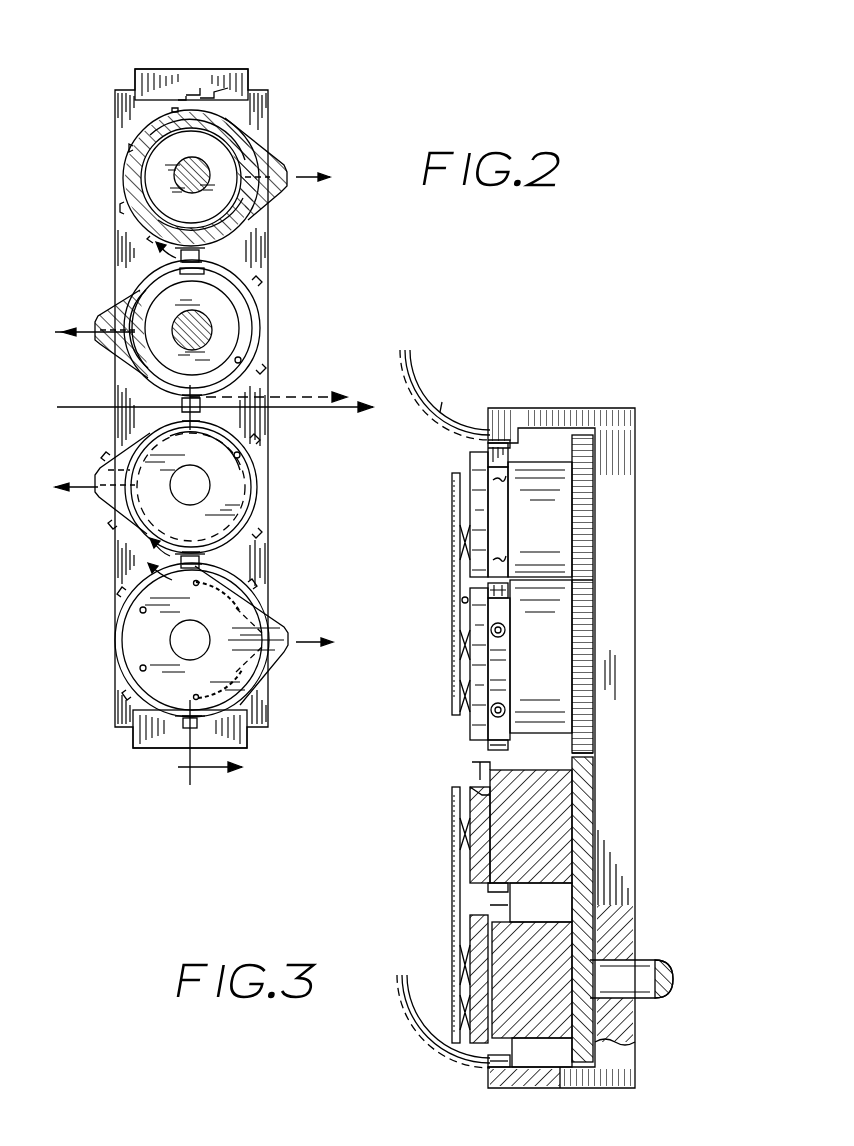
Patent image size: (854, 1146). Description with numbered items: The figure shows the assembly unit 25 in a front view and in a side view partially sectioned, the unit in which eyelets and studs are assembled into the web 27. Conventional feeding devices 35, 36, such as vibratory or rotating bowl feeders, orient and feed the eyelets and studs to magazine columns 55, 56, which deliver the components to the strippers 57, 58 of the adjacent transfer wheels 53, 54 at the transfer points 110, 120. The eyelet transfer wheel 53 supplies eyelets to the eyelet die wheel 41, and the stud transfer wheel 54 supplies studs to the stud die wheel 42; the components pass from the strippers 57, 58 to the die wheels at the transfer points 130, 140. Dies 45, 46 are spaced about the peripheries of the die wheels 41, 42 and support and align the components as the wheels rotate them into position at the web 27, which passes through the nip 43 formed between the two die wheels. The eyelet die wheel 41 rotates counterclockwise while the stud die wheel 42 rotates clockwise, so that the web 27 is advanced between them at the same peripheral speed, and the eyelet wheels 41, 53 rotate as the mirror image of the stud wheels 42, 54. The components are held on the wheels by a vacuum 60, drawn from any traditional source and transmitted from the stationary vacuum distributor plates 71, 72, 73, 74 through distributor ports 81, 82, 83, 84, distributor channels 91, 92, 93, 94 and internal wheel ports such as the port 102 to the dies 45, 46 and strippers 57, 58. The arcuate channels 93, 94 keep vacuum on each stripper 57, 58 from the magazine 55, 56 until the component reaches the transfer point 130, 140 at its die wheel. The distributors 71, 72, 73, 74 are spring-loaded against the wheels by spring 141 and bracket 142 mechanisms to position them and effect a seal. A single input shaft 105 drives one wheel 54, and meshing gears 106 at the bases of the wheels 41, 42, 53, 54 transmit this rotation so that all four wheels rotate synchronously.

In FIG. 2, the assembly unit 25 is at (335, 79).
In FIG. 3, the assembly unit 25 is at (638, 364).
In FIG. 2, the web 27 is at (72, 408).
In FIG. 3, the feeding device 35 is at (405, 350).
In FIG. 3, the feeding device 36 is at (405, 977).
In FIG. 2, the eyelet die wheel 41 is at (255, 330).
In FIG. 3, the eyelet die wheel 41 is at (556, 673).
In FIG. 2, the stud die wheel 42 is at (257, 483).
In FIG. 3, the stud die wheel 42 is at (563, 788).
In FIG. 2, the nip 43 is at (150, 401).
In FIG. 3, the nip 43 is at (470, 752).
In FIG. 2, the dies 45 is at (257, 292).
In FIG. 3, the dies 45 is at (490, 645).
In FIG. 2, the dies 46 is at (253, 450).
In FIG. 2, the eyelet transfer wheel 53 is at (125, 164).
In FIG. 3, the eyelet transfer wheel 53 is at (556, 526).
In FIG. 2, the stud transfer wheel 54 is at (122, 622).
In FIG. 3, the stud transfer wheel 54 is at (567, 932).
In FIG. 2, the eyelet magazine column 55 is at (202, 73).
In FIG. 3, the eyelet magazine column 55 is at (442, 402).
In FIG. 2, the stud magazine column 56 is at (160, 742).
In FIG. 3, the stud magazine column 56 is at (407, 1023).
In FIG. 2, the stripper 57 is at (132, 210).
In FIG. 3, the stripper 57 is at (508, 470).
In FIG. 2, the stripper 58 is at (122, 687).
In FIG. 2, the vacuum 60 is at (193, 410).
In FIG. 3, the vacuum distributor plate 71 is at (472, 722).
In FIG. 3, the vacuum distributor plate 72 is at (480, 788).
In FIG. 3, the vacuum distributor plate 73 is at (472, 466).
In FIG. 3, the vacuum distributor plate 74 is at (472, 928).
In FIG. 2, the distributor port 81 is at (105, 309).
In FIG. 2, the distributor port 82 is at (107, 465).
In FIG. 2, the distributor port 83 is at (283, 157).
In FIG. 2, the distributor port 84 is at (273, 615).
In FIG. 2, the distributor channel 91 is at (150, 288).
In FIG. 2, the distributor channel 92 is at (130, 430).
In FIG. 2, the arcuate channel 93 is at (233, 138).
In FIG. 2, the arcuate channel 94 is at (270, 593).
In FIG. 3, the internal wheel port 102 is at (482, 772).
In FIG. 3, the input shaft 105 is at (653, 1000).
In FIG. 3, the gear 106 is at (583, 508).
In FIG. 2, the transfer point 110 is at (203, 98).
In FIG. 3, the transfer point 110 is at (478, 445).
In FIG. 2, the transfer point 120 is at (197, 723).
In FIG. 3, the transfer point 120 is at (487, 1058).
In FIG. 2, the transfer point 130 is at (200, 257).
In FIG. 3, the transfer point 130 is at (478, 596).
In FIG. 2, the transfer point 140 is at (197, 563).
In FIG. 3, the transfer point 140 is at (497, 902).
In FIG. 3, the spring 141 is at (457, 541).
In FIG. 3, the bracket 142 is at (455, 512).